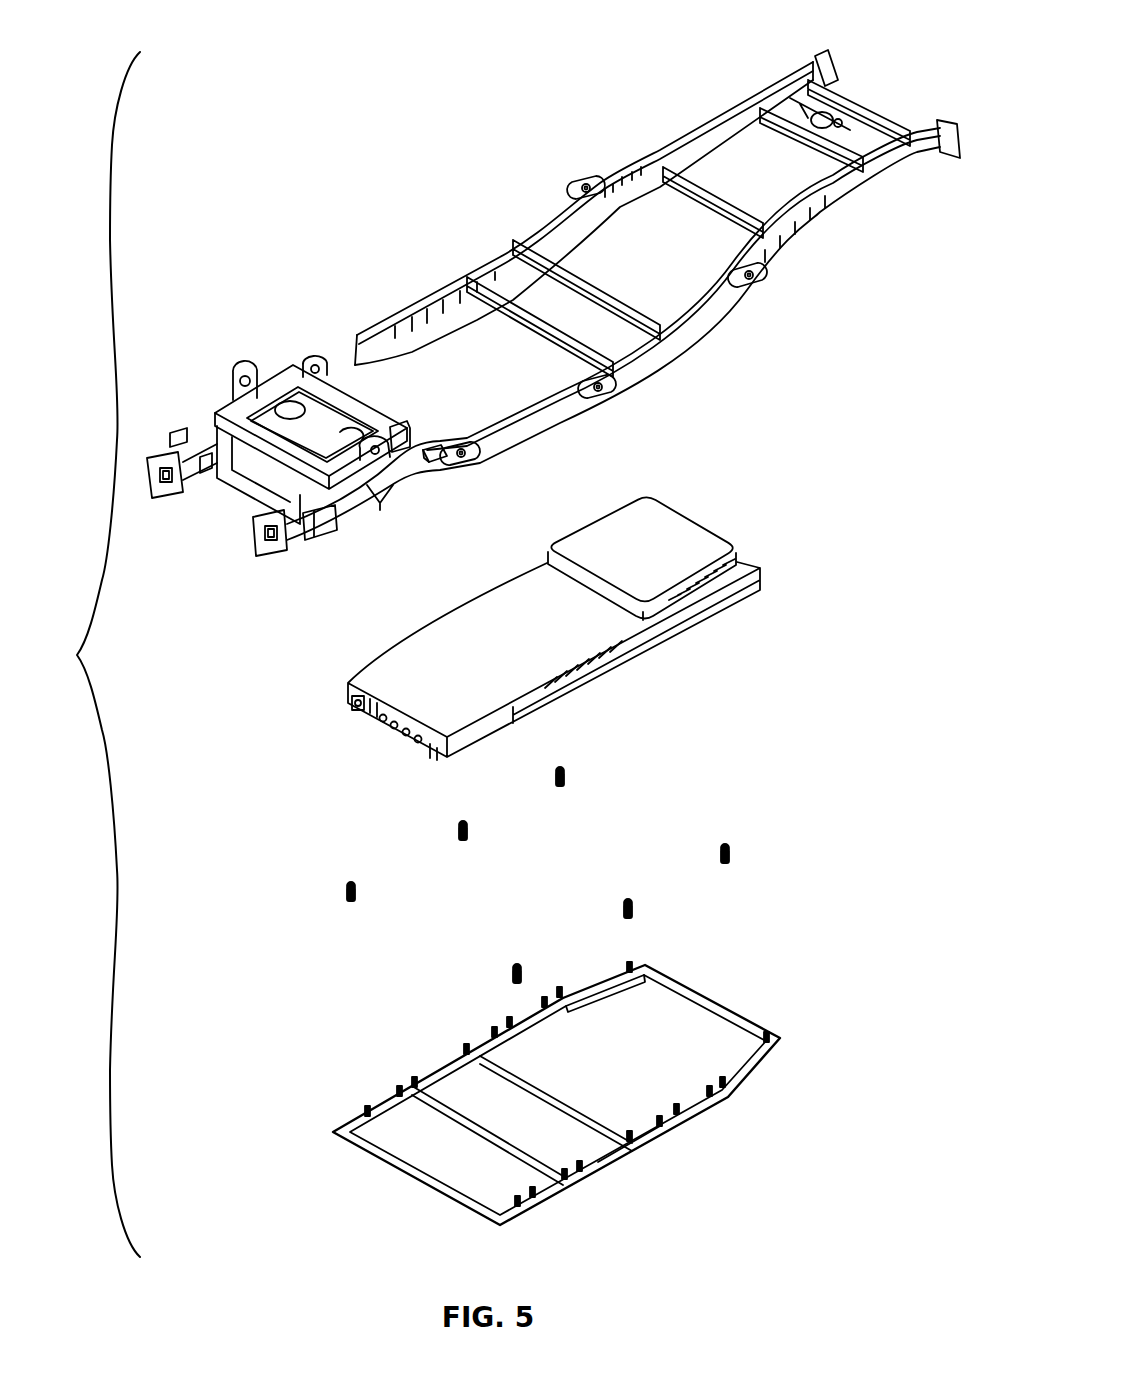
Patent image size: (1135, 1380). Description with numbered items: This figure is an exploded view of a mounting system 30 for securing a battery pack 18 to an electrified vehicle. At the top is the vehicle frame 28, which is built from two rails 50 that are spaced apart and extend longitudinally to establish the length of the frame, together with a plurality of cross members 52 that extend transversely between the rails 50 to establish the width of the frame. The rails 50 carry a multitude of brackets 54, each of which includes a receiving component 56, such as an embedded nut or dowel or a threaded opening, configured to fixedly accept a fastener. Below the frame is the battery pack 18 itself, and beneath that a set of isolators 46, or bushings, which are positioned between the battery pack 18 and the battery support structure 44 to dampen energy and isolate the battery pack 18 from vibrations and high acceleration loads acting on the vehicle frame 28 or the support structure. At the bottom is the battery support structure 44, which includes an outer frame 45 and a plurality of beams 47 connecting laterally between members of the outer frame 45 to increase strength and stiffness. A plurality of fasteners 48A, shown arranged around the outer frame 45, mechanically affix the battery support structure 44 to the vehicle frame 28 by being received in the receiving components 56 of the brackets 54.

The vehicle frame 28 is at (768, 74).
The mounting system 30 is at (89, 654).
The rails 50 is at (723, 115).
The cross members 52 is at (862, 108).
The brackets 54 is at (578, 182).
The receiving component 56 is at (588, 182).
The battery pack 18 is at (688, 520).
The isolators 46 is at (574, 776).
The battery support structure 44 is at (542, 1100).
The outer frame 45 is at (612, 1152).
The beams 47 is at (458, 1110).
The fasteners 48A is at (368, 1108).